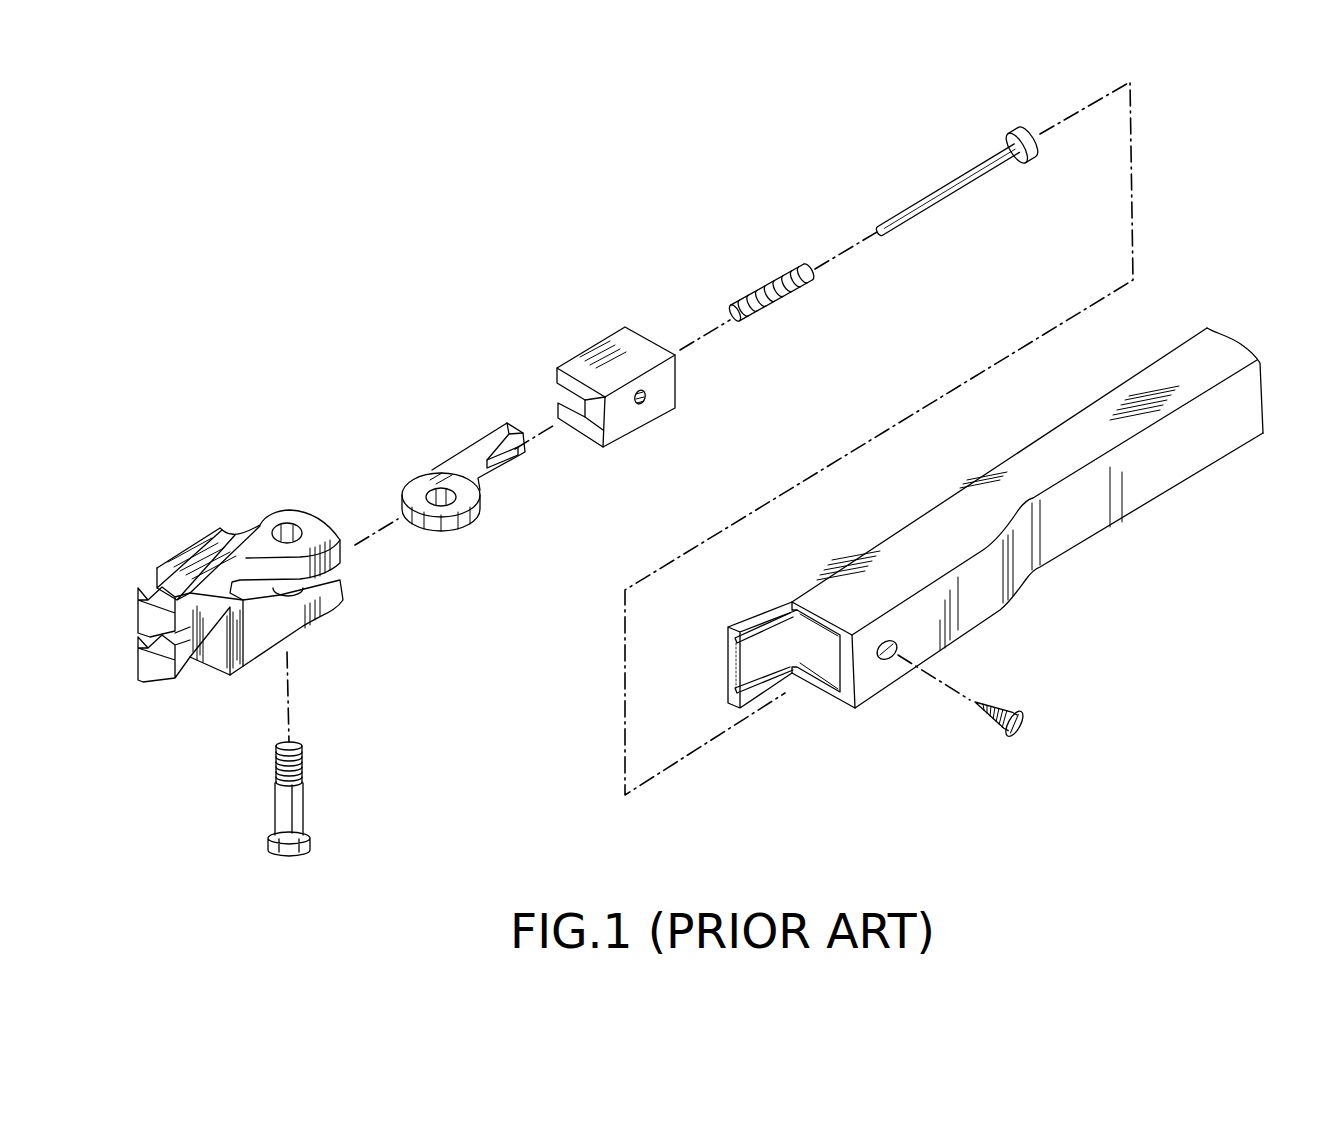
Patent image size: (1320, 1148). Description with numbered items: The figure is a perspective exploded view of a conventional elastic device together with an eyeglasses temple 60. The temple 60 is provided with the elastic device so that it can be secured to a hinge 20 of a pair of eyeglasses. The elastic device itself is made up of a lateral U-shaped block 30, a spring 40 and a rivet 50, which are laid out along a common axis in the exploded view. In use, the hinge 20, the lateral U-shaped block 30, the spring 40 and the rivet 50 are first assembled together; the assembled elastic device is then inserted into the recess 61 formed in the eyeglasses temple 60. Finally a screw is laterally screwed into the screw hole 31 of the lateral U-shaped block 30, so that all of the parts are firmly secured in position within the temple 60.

The hinge 20 is at (227, 523).
The lateral U-shaped block 30 is at (577, 330).
The screw hole 31 is at (645, 399).
The spring 40 is at (748, 257).
The rivet 50 is at (930, 163).
The eyeglasses temple 60 is at (1118, 534).
The recess 61 is at (820, 657).